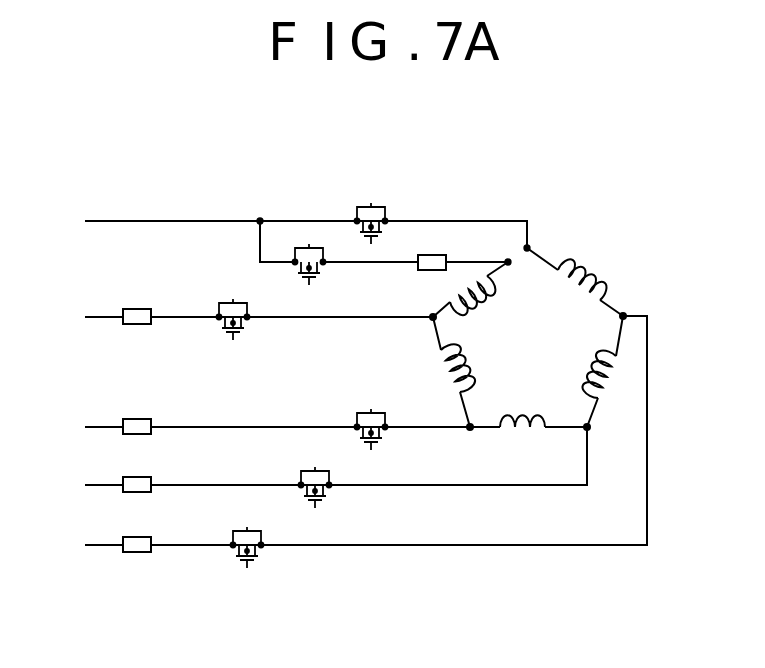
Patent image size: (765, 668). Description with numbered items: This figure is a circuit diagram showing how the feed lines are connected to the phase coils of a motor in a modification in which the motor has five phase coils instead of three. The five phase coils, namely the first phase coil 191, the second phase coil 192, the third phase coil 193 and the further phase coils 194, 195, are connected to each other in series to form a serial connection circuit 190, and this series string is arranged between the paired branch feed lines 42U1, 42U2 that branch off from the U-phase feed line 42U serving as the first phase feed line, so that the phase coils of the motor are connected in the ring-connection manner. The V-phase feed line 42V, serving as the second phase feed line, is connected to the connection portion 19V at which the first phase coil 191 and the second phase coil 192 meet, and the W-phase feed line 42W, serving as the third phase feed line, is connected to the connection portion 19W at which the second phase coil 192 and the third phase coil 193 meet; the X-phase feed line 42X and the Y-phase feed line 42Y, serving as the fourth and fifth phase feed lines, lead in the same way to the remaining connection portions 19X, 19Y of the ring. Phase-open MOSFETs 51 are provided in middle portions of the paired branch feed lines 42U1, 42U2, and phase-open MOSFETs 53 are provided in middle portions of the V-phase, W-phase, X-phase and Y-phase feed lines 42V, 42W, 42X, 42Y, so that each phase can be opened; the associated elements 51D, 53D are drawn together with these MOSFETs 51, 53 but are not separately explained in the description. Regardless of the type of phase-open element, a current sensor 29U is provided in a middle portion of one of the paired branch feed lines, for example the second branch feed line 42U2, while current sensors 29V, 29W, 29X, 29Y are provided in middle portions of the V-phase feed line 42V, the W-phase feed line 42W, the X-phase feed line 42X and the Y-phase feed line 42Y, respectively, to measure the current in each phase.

The U-phase feed line 42U is at (168, 221).
The first branch feed line 42U1 is at (450, 221).
The second branch feed line 42U2 is at (488, 221).
The V-phase feed line 42V is at (182, 317).
The W-phase feed line 42W is at (183, 427).
The X-phase feed line 42X is at (453, 487).
The Y-phase feed line 42Y is at (525, 547).
The current sensor 29U is at (432, 272).
The current sensor 29V is at (133, 308).
The current sensor 29W is at (137, 418).
The current sensor 29X is at (137, 477).
The current sensor 29Y is at (137, 553).
The phase-open MOSFET 51 is at (284, 247).
The diode of switching element 51D is at (308, 244).
The phase-open MOSFET 53 is at (222, 343).
The diode of switching element 53D is at (233, 300).
The serial connection circuit 190 is at (520, 348).
The first phase coil 191 is at (487, 298).
The second phase coil 192 is at (466, 344).
The third phase coil 193 is at (510, 413).
The phase coil 194 is at (580, 376).
The phase coil 195 is at (562, 300).
The connection portion 19V is at (430, 321).
The connection portion 19W is at (471, 429).
The X-phase terminal 19X is at (589, 429).
The Y-phase terminal 19Y is at (628, 314).